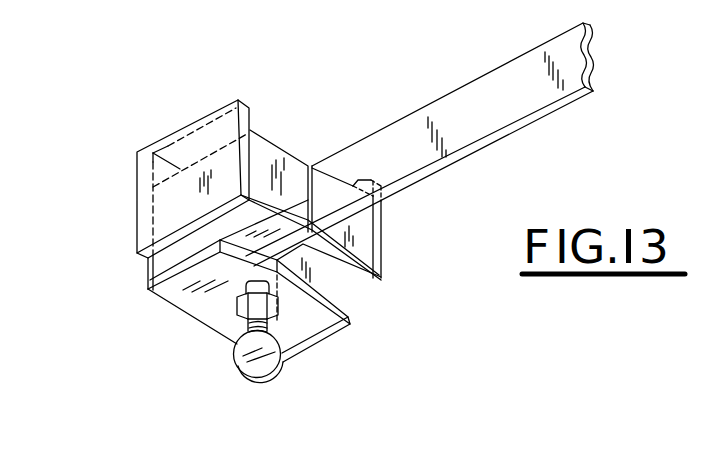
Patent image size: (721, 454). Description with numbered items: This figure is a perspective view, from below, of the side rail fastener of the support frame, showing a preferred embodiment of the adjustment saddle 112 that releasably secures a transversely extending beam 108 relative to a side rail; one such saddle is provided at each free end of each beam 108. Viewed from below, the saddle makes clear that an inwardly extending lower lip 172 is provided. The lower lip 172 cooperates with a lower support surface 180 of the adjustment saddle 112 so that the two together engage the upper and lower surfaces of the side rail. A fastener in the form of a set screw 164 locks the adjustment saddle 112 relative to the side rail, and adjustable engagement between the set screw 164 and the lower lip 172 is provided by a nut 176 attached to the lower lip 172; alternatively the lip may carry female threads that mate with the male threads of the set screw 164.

The transversely extending beam 108 is at (467, 100).
The adjustment saddle 112 is at (138, 200).
The set screw 164 is at (232, 363).
The lower lip 172 is at (352, 318).
The nut 176 is at (233, 308).
The lower support surface 180 is at (350, 265).